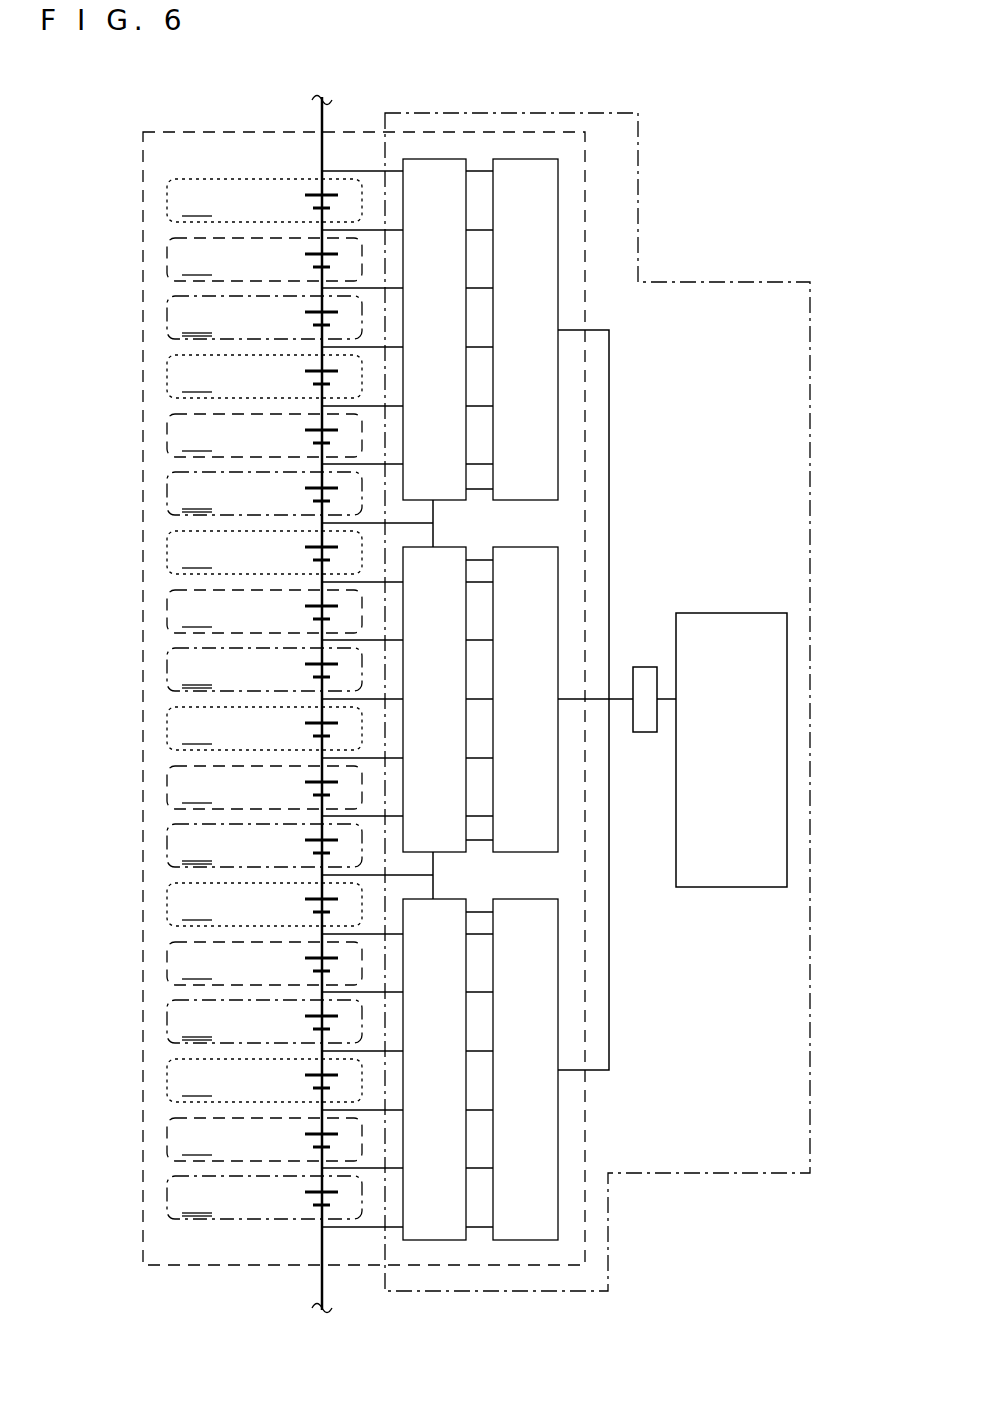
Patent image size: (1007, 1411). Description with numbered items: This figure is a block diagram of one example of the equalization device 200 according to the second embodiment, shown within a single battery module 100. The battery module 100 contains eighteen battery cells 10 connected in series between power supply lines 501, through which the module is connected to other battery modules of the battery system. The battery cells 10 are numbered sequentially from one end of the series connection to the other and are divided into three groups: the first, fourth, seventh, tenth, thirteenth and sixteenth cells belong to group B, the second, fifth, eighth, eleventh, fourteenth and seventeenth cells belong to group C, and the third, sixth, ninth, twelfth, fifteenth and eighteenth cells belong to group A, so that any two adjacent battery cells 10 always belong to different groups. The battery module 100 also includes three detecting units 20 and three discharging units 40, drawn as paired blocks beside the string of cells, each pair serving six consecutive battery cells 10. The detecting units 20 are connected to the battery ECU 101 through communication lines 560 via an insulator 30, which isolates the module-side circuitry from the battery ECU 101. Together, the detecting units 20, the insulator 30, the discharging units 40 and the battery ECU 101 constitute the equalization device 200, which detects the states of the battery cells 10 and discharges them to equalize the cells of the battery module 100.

The battery cell 10 is at (285, 1195).
The detecting unit 20 is at (539, 343).
The insulator 30 is at (646, 735).
The discharging unit 40 is at (447, 343).
The battery module 100 is at (587, 222).
The battery ECU 101 is at (768, 612).
The equalization device 200 is at (638, 253).
The power supply line 501 is at (322, 127).
The communication line 560 is at (620, 695).